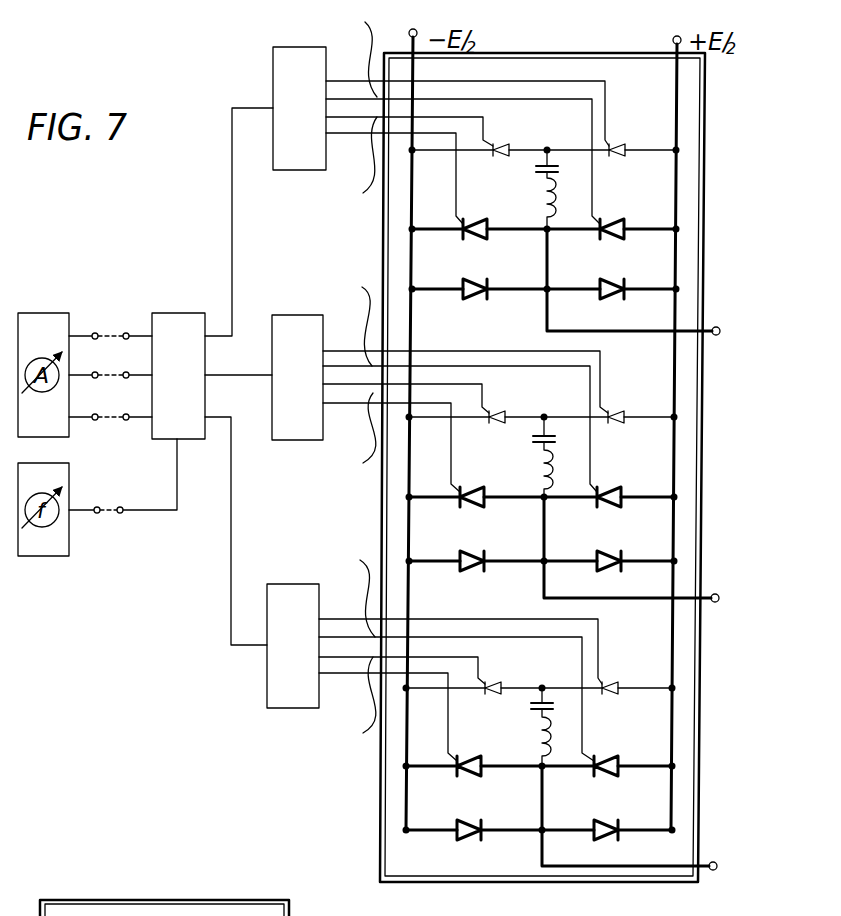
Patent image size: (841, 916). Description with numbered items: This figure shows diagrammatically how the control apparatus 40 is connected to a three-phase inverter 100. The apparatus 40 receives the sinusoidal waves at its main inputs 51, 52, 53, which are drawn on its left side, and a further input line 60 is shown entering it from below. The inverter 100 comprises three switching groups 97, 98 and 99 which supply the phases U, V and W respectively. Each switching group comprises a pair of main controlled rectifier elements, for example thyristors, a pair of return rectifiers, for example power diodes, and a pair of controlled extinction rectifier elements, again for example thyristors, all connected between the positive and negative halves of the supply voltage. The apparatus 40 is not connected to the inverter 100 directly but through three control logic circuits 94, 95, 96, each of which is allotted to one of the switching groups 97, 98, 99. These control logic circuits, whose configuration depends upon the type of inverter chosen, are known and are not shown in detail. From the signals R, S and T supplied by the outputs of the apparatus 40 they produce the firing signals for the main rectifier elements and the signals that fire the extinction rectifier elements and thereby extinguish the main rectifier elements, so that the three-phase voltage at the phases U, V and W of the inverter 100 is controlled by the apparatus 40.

The apparatus 40 is at (212, 376).
The main input 51 is at (148, 337).
The main input 52 is at (148, 376).
The main input 53 is at (148, 418).
The frequency setting input line 60 is at (177, 476).
The control logic circuit 94 is at (288, 78).
The control logic circuit 95 is at (295, 425).
The control logic circuit 96 is at (287, 675).
The switching group 97 is at (682, 258).
The switching group 98 is at (680, 533).
The switching group 99 is at (677, 803).
The three-phase inverter 100 is at (402, 846).